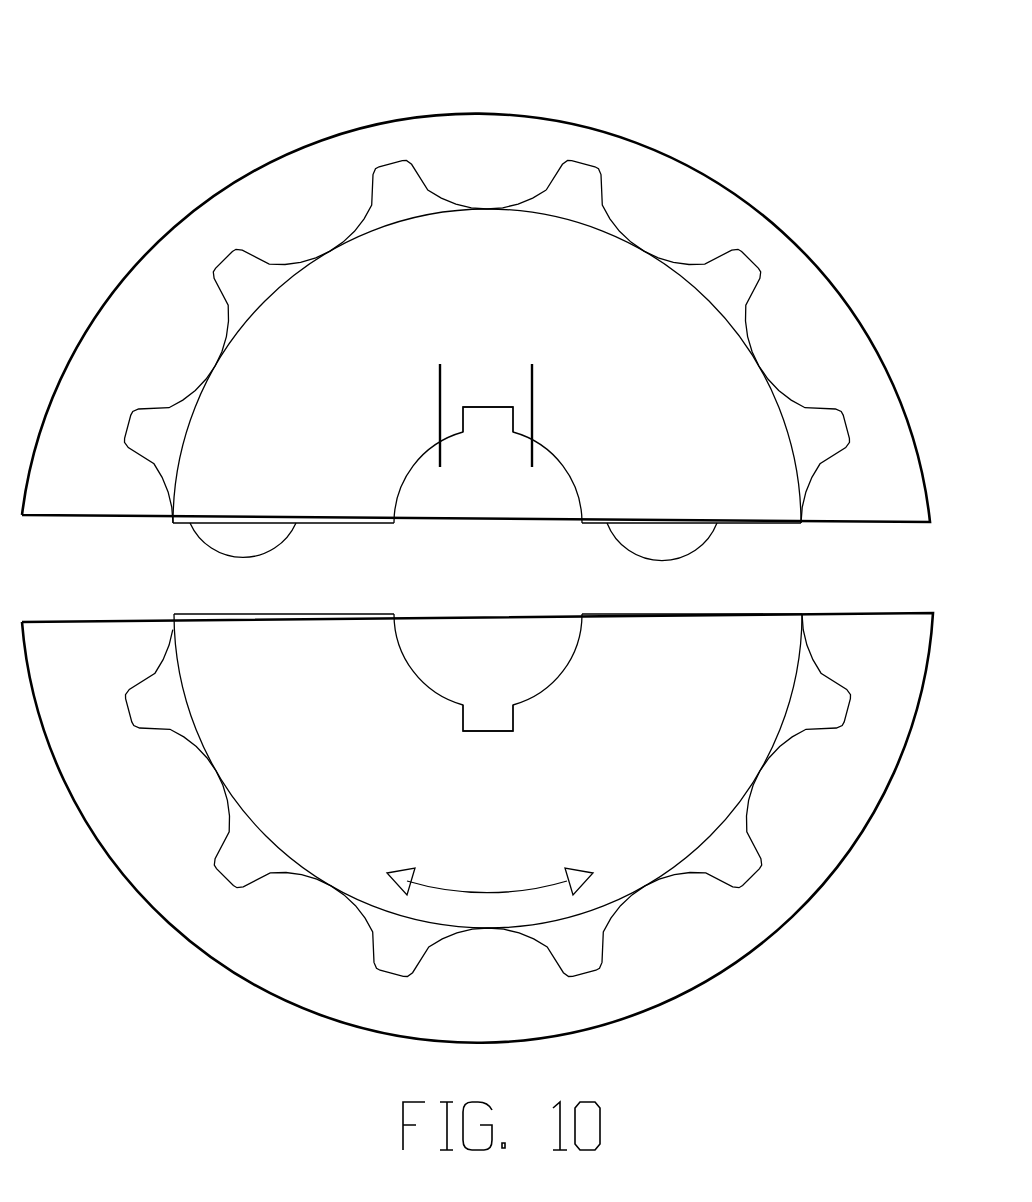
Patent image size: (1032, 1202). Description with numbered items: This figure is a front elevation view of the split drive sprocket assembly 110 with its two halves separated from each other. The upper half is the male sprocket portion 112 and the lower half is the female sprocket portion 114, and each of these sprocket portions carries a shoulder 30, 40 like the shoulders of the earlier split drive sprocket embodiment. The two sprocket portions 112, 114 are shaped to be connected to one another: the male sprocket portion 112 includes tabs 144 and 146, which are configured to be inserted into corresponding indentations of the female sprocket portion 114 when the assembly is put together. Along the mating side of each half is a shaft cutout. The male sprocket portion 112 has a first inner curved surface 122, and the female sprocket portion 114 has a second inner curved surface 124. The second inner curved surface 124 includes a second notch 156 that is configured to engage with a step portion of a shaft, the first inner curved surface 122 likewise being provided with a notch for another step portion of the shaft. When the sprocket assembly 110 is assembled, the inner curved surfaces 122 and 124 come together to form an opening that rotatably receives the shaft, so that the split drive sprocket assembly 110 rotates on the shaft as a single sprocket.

The shoulder 30 is at (138, 903).
The shoulder 40 is at (317, 142).
The split drive sprocket assembly 110 is at (715, 123).
The male sprocket portion 112 is at (337, 268).
The female sprocket portion 114 is at (223, 753).
The first inner curved surface 122 is at (577, 500).
The second inner curved surface 124 is at (563, 668).
The tab 144 is at (207, 548).
The tab 146 is at (703, 542).
The second notch 156 is at (488, 410).